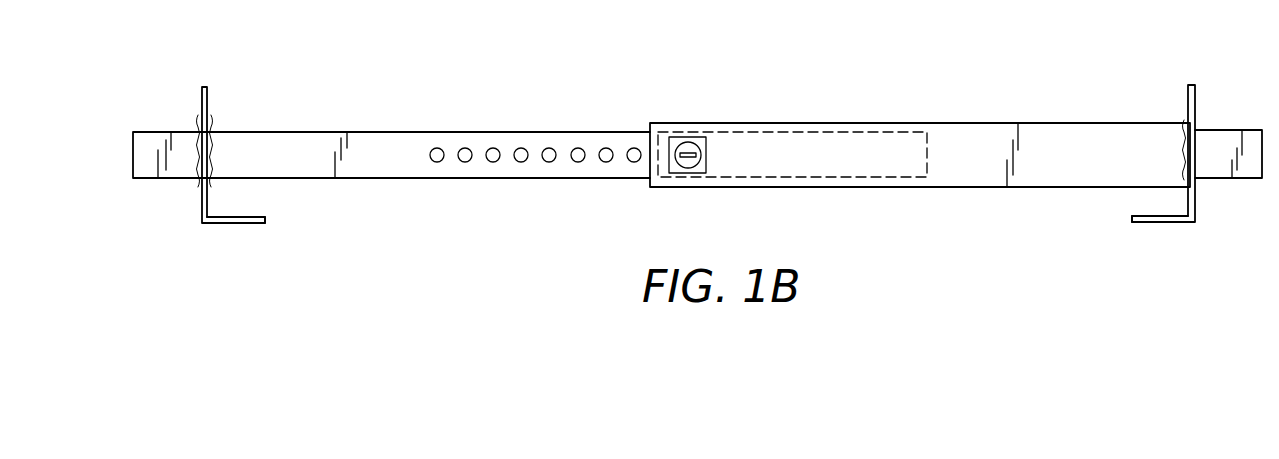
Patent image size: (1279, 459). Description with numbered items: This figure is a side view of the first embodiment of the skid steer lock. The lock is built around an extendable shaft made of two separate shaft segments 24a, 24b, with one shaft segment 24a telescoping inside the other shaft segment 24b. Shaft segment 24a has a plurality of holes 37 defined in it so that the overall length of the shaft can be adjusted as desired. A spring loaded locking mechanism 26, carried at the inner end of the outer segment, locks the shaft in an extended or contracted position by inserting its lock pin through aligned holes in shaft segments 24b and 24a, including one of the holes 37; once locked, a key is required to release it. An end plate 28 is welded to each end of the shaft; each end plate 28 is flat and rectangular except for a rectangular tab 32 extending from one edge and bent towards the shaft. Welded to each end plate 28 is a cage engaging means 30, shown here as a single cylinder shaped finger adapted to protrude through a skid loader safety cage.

The shaft segment 24a is at (403, 132).
The shaft segment 24b is at (853, 123).
The locking mechanism 26 is at (673, 138).
The end plate 28 is at (208, 95).
The cage engaging means 30 is at (192, 120).
The rectangular tab 32 is at (235, 225).
The holes 37 is at (579, 162).